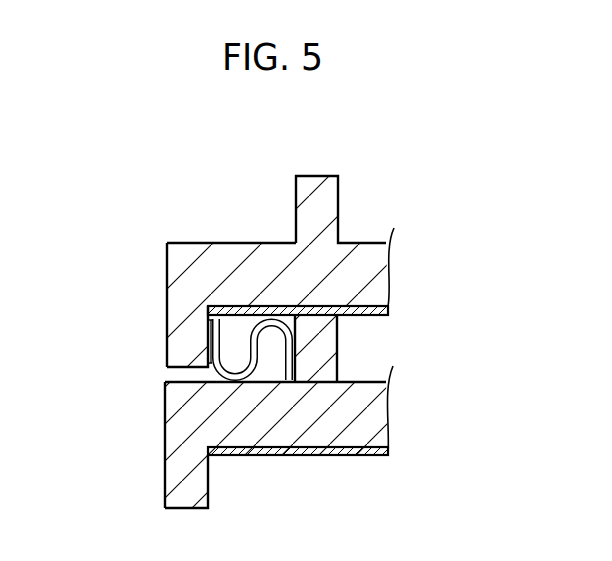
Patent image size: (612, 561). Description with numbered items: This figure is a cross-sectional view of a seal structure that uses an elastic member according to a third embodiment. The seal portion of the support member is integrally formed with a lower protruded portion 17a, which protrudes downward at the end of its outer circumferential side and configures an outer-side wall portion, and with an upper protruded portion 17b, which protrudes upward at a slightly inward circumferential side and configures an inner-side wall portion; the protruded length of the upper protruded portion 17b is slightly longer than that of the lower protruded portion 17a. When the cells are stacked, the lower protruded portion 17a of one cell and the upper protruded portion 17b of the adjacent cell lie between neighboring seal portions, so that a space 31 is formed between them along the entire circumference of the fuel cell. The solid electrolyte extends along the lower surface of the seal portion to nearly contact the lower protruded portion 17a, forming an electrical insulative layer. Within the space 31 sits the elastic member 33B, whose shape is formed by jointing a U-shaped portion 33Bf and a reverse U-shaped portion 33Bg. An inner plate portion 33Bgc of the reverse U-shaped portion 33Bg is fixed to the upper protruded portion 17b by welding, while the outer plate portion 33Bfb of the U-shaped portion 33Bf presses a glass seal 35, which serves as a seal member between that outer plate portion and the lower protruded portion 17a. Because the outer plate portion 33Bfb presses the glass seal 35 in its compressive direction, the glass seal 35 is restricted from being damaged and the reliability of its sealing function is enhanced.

The lower protruded portion 17a is at (170, 344).
The upper protruded portion 17b is at (338, 199).
The space 31 is at (238, 347).
The elastic member 33B is at (200, 317).
The U-shaped portion 33Bf is at (230, 378).
The outer plate portion 33Bfb is at (226, 328).
The reverse U-shaped portion 33Bg is at (255, 323).
The inner plate portion 33Bgc is at (270, 382).
The glass seal 35 is at (206, 340).